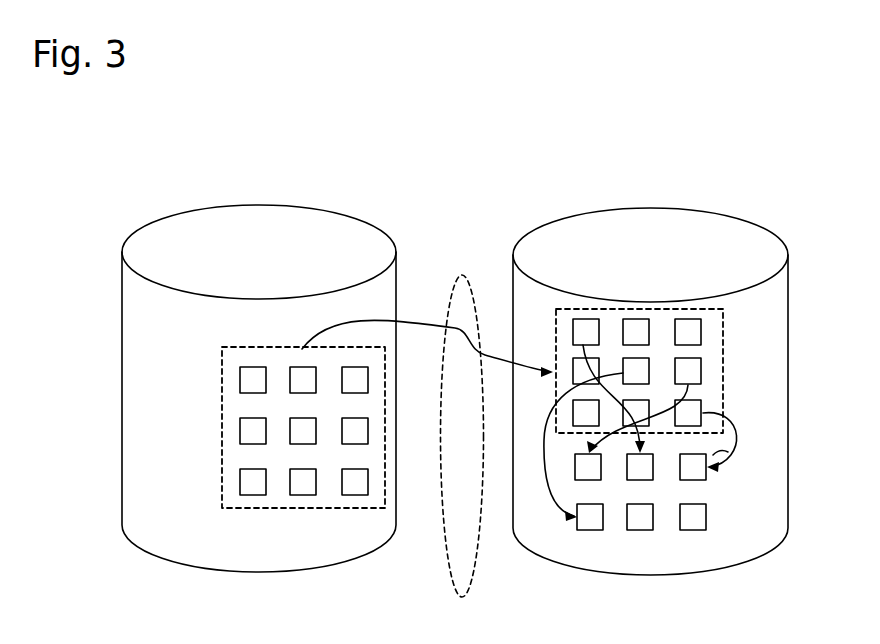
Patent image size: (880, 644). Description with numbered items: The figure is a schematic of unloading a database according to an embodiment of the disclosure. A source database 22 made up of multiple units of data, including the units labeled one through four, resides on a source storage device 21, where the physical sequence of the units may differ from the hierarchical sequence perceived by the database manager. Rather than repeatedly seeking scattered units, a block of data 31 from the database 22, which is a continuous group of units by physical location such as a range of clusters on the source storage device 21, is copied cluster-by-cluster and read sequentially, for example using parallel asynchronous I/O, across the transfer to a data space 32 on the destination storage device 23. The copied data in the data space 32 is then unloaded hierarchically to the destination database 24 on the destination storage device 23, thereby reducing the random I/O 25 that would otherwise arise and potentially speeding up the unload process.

The source storage device 21 is at (355, 570).
The source database 22 is at (208, 343).
The destination storage device 23 is at (737, 568).
The destination database 24 is at (717, 452).
The random I/O 25 is at (485, 568).
The block of data 31 is at (237, 513).
The data space 32 is at (728, 338).